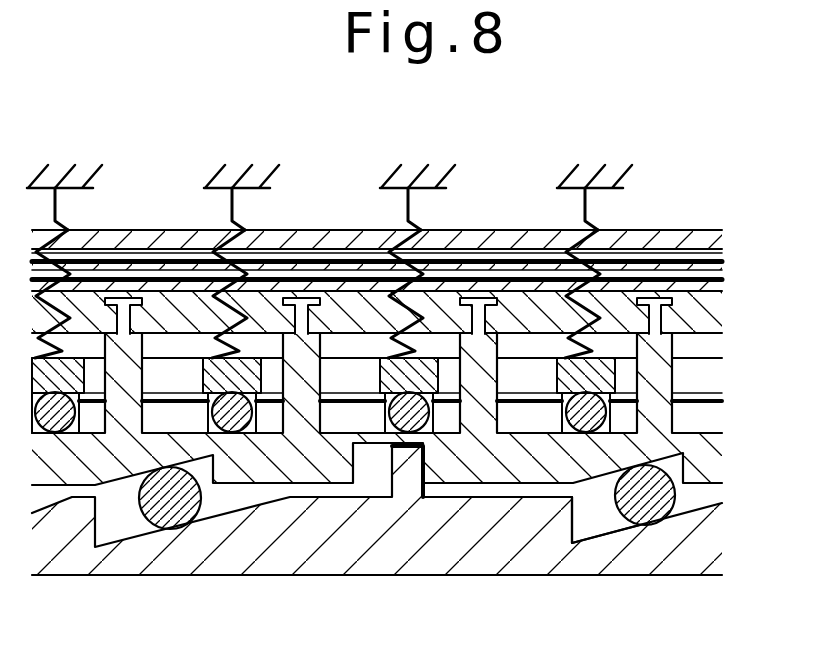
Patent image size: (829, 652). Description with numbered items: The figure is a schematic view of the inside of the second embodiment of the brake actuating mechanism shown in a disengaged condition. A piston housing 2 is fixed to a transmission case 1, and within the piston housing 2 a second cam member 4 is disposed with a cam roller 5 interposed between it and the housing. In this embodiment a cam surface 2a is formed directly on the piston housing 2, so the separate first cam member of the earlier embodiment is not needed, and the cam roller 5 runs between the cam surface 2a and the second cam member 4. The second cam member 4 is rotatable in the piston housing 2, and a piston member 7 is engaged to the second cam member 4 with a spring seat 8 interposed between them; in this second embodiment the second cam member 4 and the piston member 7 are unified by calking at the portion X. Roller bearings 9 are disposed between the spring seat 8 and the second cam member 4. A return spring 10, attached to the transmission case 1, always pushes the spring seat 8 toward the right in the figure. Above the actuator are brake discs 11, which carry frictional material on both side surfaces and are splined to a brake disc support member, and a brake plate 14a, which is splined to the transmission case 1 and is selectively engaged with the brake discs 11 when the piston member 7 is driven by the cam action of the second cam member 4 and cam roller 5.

The transmission case 1 is at (612, 176).
The return spring 10 is at (583, 210).
The calking portion X is at (293, 328).
The brake plate 14a is at (710, 240).
The brake discs 11 is at (712, 272).
The piston member 7 is at (710, 312).
The spring seat 8 is at (610, 373).
The roller bearings 9 is at (590, 417).
The second cam member 4 is at (710, 462).
The cam roller 5 is at (708, 500).
The piston housing 2 is at (703, 543).
The cam surface 2a is at (603, 529).